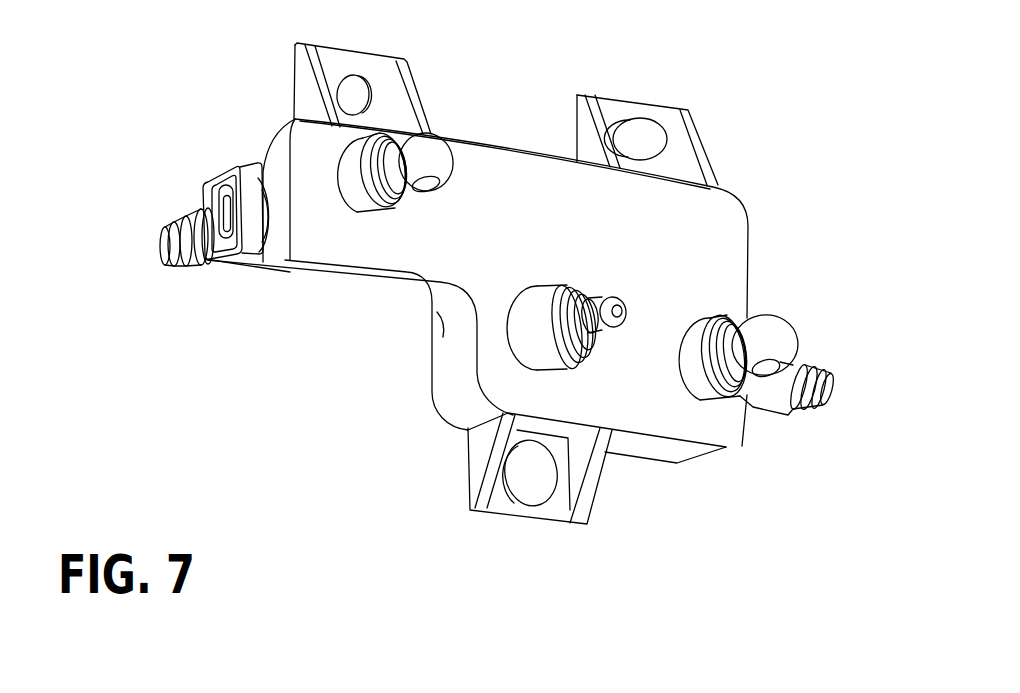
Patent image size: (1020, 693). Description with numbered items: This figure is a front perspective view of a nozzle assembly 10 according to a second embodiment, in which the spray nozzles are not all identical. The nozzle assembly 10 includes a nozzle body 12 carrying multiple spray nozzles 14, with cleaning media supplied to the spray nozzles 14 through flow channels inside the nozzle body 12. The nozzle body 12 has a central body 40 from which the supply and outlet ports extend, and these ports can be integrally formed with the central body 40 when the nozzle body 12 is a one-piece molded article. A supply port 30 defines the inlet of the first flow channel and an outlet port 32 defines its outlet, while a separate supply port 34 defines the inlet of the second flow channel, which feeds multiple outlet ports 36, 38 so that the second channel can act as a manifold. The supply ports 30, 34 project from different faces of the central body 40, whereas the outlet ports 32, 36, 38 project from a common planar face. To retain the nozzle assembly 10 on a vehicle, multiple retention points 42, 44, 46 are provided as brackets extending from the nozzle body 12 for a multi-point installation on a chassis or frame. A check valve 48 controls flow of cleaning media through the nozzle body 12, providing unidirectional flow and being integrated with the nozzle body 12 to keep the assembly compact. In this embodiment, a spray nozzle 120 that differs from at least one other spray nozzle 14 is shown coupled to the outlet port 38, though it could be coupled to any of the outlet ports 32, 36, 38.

The nozzle assembly 10 is at (170, 136).
The nozzle body 12 is at (757, 206).
The spray nozzle 14 is at (441, 130).
The supply port 30 is at (257, 257).
The outlet port 32 is at (366, 207).
The supply port 34 is at (784, 418).
The outlet port 36 is at (710, 388).
The outlet port 38 is at (523, 347).
The central body 40 is at (543, 172).
The retention point 42 is at (295, 75).
The retention point 44 is at (693, 134).
The retention point 46 is at (528, 517).
The check valve 48 is at (162, 258).
The spray nozzle 120 is at (618, 335).